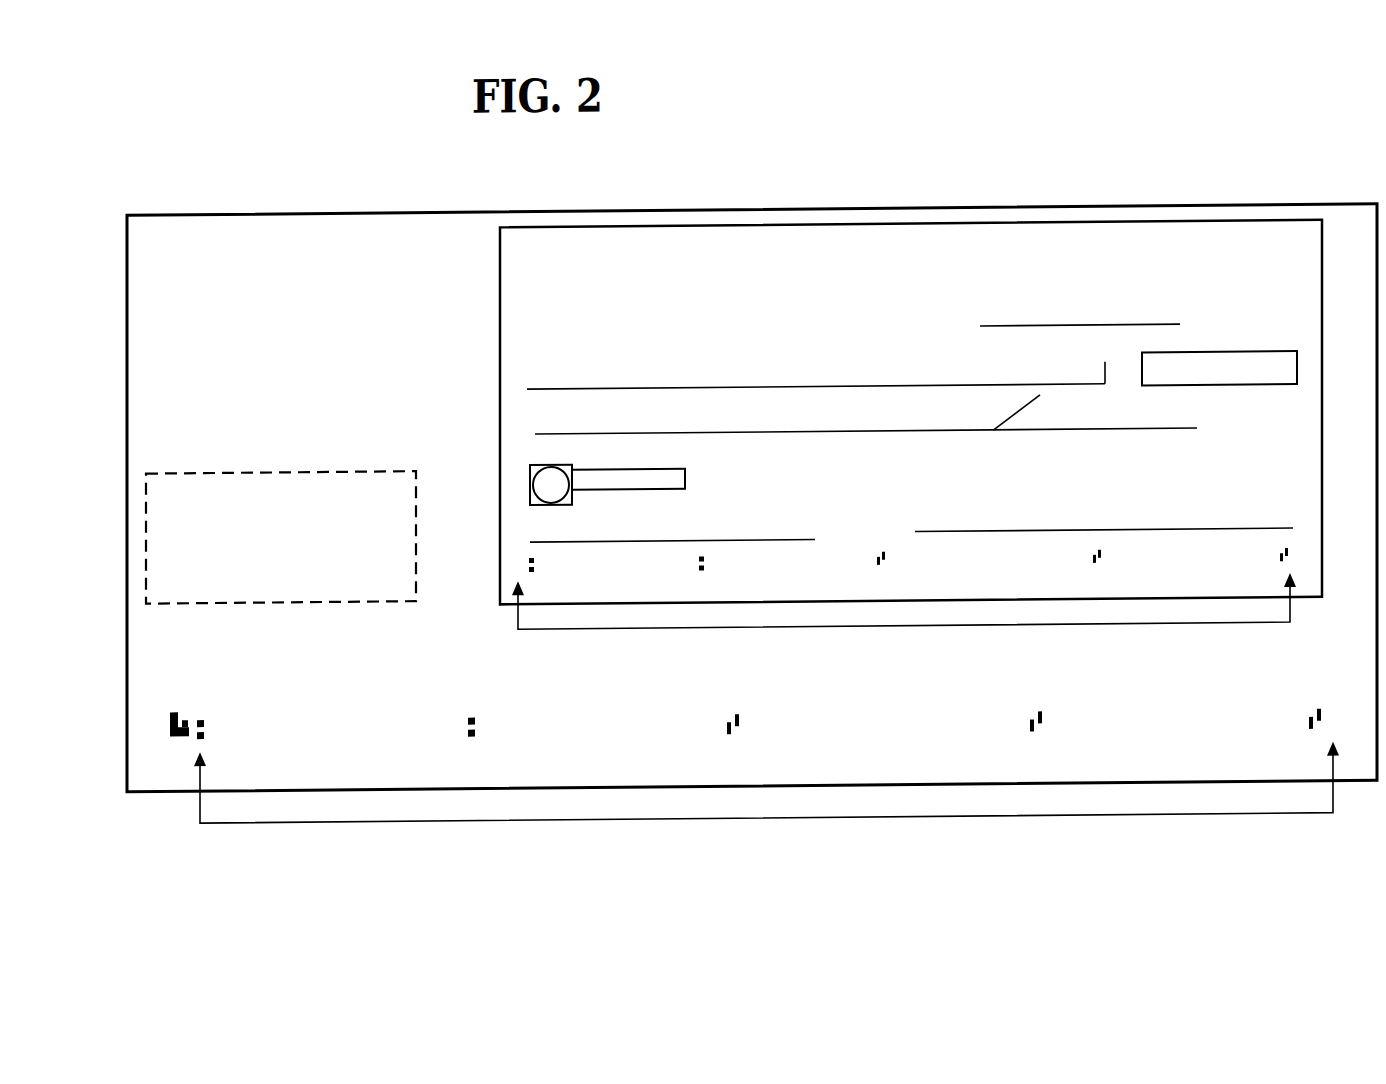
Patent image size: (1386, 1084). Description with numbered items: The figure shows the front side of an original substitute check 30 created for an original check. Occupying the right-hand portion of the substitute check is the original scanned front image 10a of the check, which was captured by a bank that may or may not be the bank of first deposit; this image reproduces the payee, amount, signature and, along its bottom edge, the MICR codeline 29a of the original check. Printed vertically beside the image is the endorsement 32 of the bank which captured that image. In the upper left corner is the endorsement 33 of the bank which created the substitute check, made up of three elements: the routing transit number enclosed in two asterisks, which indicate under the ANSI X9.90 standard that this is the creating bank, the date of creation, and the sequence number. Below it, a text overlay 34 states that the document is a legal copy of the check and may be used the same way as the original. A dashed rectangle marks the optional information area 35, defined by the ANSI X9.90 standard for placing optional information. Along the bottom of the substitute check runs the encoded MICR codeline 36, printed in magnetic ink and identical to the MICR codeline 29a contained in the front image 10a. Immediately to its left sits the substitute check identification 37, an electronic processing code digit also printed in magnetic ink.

The original substitute check 30 is at (1165, 139).
The original scanned front image 10a is at (855, 232).
The endorsement of the bank which created the original substitute check 33 is at (222, 248).
The text overlay 34 is at (165, 338).
The endorsement of the bank which captured the image 32 is at (438, 544).
The optional information area 35 is at (240, 605).
The MICR codeline contained in the front image 29a is at (923, 634).
The substitute check identification 37 is at (178, 744).
The MICR codeline 36 is at (790, 825).